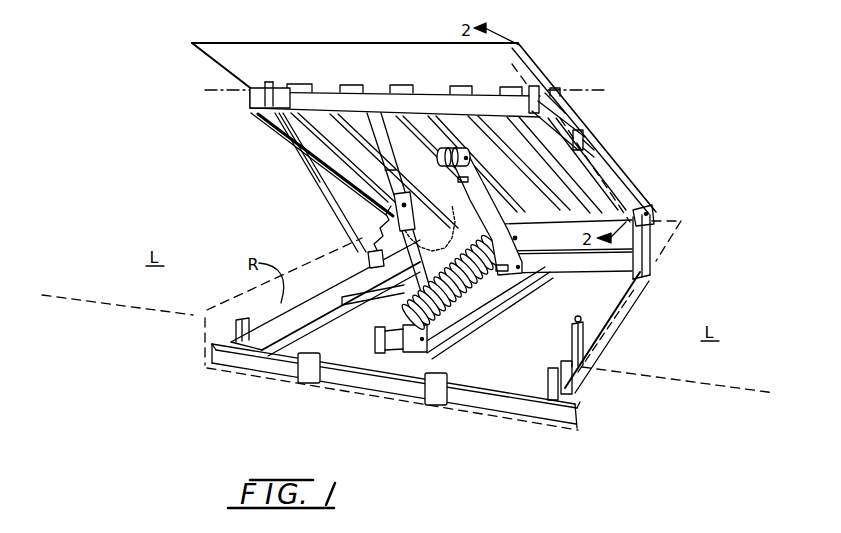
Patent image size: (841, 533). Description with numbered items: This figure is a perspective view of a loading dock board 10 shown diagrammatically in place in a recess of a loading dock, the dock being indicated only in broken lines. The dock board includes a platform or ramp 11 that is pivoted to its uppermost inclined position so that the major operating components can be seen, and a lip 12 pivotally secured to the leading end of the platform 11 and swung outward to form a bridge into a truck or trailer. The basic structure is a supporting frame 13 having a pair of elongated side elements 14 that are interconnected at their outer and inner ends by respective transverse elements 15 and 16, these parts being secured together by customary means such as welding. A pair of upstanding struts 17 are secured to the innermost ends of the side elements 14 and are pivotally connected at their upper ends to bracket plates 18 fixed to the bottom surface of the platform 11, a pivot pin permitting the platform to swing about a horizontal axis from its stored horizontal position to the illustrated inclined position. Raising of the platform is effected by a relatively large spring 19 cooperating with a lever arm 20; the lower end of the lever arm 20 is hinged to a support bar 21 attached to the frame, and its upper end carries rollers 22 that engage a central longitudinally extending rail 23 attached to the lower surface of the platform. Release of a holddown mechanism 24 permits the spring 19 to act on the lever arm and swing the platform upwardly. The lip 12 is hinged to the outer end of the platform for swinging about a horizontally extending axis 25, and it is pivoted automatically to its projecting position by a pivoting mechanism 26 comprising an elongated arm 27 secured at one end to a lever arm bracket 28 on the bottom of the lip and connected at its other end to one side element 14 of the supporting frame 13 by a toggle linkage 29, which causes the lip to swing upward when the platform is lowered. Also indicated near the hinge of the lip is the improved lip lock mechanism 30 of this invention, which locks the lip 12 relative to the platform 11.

The loading dock board 10 is at (632, 76).
The platform 11 is at (626, 160).
The lip 12 is at (376, 43).
The supporting frame 13 is at (481, 412).
The side elements 14 is at (302, 322).
The transverse element 15 is at (375, 381).
The transverse element 16 is at (590, 268).
The upstanding struts 17 is at (646, 254).
The bracket plates 18 is at (645, 212).
The spring 19 is at (466, 303).
The lever arm 20 is at (519, 238).
The support bar 21 is at (487, 300).
The rollers 22 is at (443, 150).
The rail 23 is at (437, 128).
The holddown mechanism 24 is at (388, 206).
The axis 25 is at (593, 92).
The pivoting mechanism 26 is at (312, 185).
The elongated arm 27 is at (300, 155).
The lever arm bracket 28 is at (261, 96).
The toggle linkage 29 is at (367, 257).
The lip lock mechanism 30 is at (583, 132).